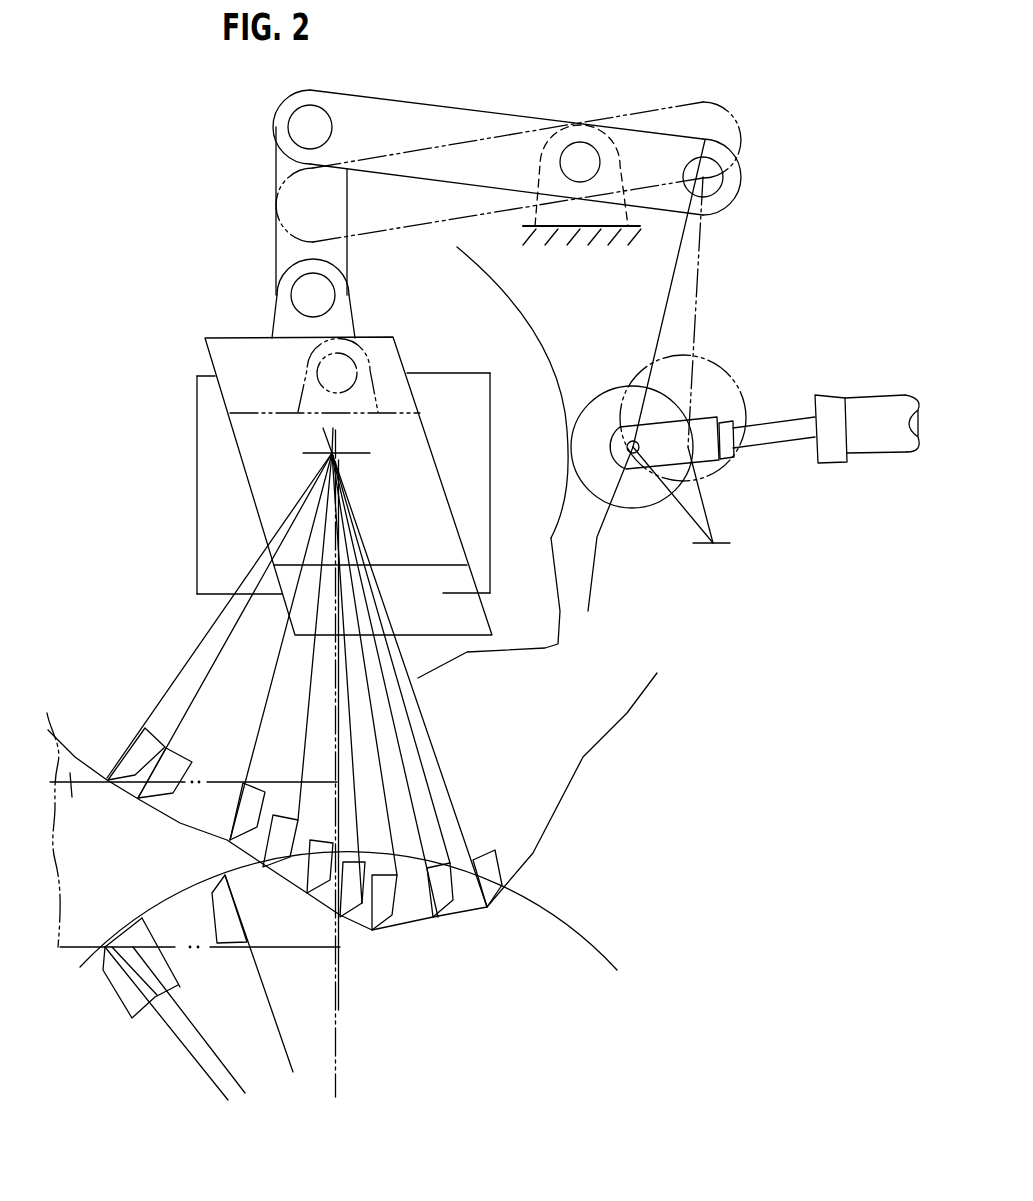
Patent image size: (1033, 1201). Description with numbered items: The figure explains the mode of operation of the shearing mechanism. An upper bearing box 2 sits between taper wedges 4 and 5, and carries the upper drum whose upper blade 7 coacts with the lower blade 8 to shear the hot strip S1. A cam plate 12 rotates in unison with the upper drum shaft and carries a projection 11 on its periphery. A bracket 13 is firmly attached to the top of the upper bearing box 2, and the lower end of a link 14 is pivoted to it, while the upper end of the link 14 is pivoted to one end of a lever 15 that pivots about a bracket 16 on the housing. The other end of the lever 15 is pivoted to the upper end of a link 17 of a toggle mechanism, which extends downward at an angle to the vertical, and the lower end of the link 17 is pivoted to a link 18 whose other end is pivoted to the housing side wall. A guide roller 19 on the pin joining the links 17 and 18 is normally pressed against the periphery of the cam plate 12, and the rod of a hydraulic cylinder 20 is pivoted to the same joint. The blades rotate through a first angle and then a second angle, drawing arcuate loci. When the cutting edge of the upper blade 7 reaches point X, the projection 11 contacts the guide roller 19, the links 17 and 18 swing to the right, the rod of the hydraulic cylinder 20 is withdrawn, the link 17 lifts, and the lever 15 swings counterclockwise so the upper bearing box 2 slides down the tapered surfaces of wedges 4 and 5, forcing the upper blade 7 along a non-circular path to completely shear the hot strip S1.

The upper bearing box 2 is at (227, 347).
The taper wedge 4 is at (200, 512).
The taper wedge 5 is at (483, 462).
The upper blade 7 is at (133, 753).
The lower blade 8 is at (227, 915).
The projection 11 is at (543, 624).
The cam plate 12 is at (500, 333).
The bracket 13 is at (343, 318).
The link 14 is at (287, 248).
The lever 15 is at (445, 120).
The bracket 16 is at (595, 212).
The link 17 is at (673, 307).
The link 18 is at (685, 517).
The guide roller 19 is at (727, 402).
The hydraulic cylinder 20 is at (862, 412).
The hot strip S1 is at (262, 813).
The point X is at (230, 840).